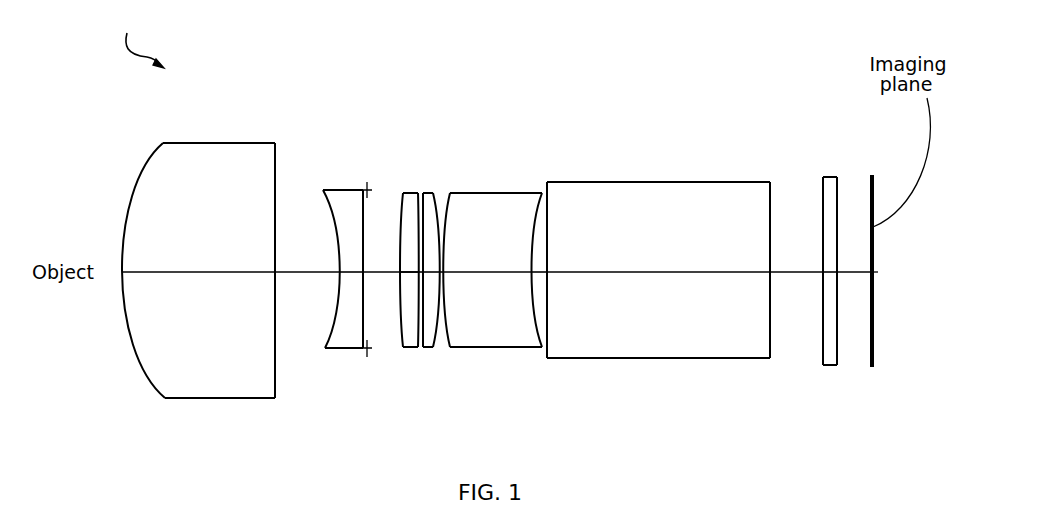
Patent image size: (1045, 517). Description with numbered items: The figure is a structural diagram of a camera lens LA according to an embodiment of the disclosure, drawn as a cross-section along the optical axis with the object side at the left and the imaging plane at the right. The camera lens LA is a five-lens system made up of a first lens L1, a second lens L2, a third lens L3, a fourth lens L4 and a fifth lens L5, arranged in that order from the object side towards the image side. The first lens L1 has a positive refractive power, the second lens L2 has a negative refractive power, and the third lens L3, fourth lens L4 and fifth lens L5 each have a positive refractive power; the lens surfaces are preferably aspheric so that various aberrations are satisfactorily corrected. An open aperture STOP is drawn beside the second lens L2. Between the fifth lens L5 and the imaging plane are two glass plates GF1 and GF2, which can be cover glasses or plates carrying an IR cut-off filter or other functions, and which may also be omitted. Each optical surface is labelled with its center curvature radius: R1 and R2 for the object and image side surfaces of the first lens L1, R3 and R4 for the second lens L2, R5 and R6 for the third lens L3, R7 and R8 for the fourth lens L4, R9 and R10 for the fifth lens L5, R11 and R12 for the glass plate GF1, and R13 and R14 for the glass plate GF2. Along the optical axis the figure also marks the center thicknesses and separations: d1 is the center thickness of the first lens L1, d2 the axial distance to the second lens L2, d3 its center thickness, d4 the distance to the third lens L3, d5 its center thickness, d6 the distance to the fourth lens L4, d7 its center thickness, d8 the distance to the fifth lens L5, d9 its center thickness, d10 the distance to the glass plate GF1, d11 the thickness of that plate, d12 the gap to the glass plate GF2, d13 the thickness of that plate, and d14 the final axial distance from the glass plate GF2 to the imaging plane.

The camera lens LA is at (117, 31).
The first lens L1 is at (181, 286).
The second lens L2 is at (318, 309).
The third lens L3 is at (403, 215).
The fourth lens L4 is at (435, 212).
The fifth lens L5 is at (514, 311).
The open aperture STOP is at (364, 188).
The glass plate GF1 is at (658, 305).
The glass plate GF2 is at (823, 214).
The curvature radius of the object side surface of the first lens R1 is at (123, 310).
The curvature radius of the image side surface of the first lens R2 is at (275, 295).
The curvature radius of the object side surface of the second lens R3 is at (340, 283).
The curvature radius of the image side surface of the second lens R4 is at (362, 283).
The curvature radius of the object side surface of the third lens R5 is at (400, 283).
The curvature radius of the image side surface of the third lens R6 is at (418, 283).
The curvature radius of the object side surface of the fourth lens R7 is at (424, 283).
The curvature radius of the image side surface of the fourth lens R8 is at (443, 283).
The curvature radius of the object side surface of the fifth lens R9 is at (444, 276).
The curvature radius of the image side surface of the fifth lens R10 is at (535, 278).
The curvature radius of the object side surface of the glass plate GF1 R11 is at (551, 283).
The curvature radius of the image side surface of the glass plate GF1 R12 is at (770, 297).
The curvature radius of the object side surface of the glass plate GF2 R13 is at (823, 290).
The curvature radius of the image side surface of the glass plate GF2 R14 is at (837, 290).
The center thickness of the first lens d1 is at (198, 264).
The axial distance from the first lens to the second lens d2 is at (307, 264).
The center thickness of the second lens d3 is at (351, 264).
The axial distance from the second lens to the third lens d4 is at (381, 264).
The center thickness of the third lens d5 is at (414, 268).
The axial distance from the third lens to the fourth lens d6 is at (404, 240).
The center thickness of the fourth lens d7 is at (443, 265).
The axial distance from the fourth lens to the fifth lens d8 is at (446, 268).
The center thickness of the fifth lens d9 is at (487, 264).
The axial distance from the fifth lens to the glass plate GF1 d10 is at (548, 265).
The center thickness of the glass plate GF1 d11 is at (658, 263).
The axial distance from the glass plate GF1 to the glass plate GF2 d12 is at (796, 264).
The center thickness of the glass plate GF2 d13 is at (832, 266).
The axial distance from the glass plate GF2 to the imaging plane d14 is at (854, 264).